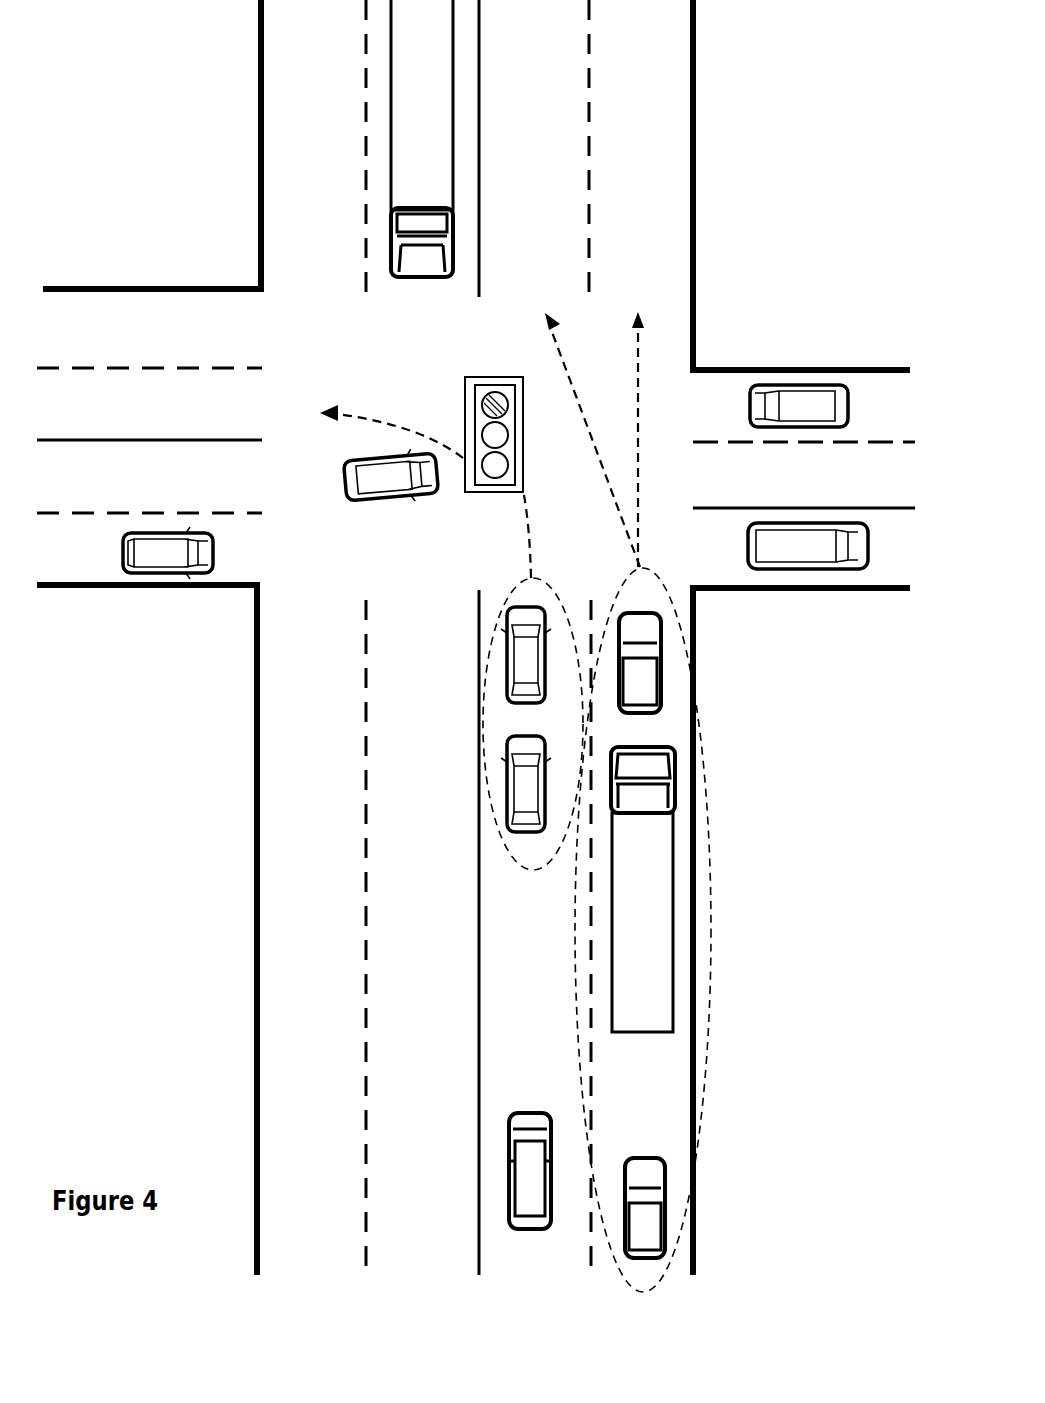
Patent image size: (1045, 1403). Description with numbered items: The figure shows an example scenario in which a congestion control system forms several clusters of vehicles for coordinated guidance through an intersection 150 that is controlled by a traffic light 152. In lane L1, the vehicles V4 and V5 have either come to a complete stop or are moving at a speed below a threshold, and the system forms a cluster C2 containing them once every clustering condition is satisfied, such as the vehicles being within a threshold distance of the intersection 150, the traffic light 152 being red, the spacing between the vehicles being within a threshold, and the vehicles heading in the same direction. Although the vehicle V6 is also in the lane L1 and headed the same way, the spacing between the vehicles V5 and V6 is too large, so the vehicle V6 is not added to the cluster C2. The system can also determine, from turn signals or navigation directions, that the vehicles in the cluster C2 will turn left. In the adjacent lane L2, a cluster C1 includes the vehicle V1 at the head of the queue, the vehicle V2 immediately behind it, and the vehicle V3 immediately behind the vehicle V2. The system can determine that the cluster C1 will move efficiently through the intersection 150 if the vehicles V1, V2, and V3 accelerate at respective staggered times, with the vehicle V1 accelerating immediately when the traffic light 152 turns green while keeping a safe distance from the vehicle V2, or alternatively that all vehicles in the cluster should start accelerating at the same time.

The intersection 150 is at (752, 295).
The traffic light 152 is at (487, 377).
The vehicle V1 is at (661, 680).
The vehicle V2 is at (676, 838).
The vehicle V3 is at (666, 1210).
The vehicle V4 is at (507, 663).
The vehicle V5 is at (507, 781).
The vehicle V6 is at (508, 1163).
The cluster C1 is at (717, 980).
The cluster C2 is at (517, 867).
The lane L1 is at (518, 1282).
The lane L2 is at (616, 1282).